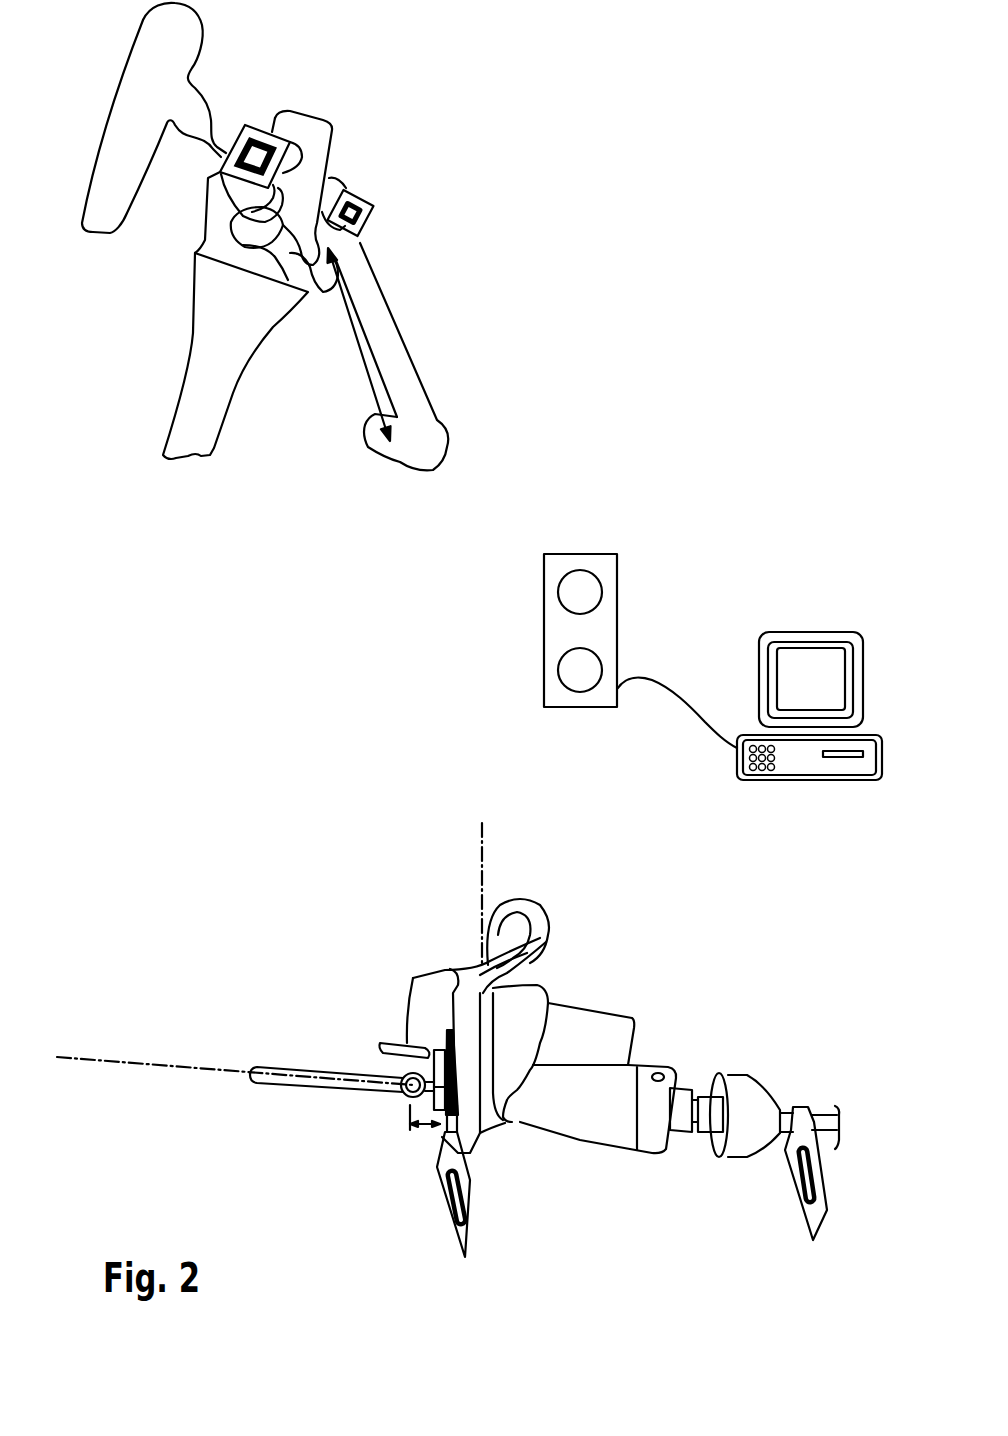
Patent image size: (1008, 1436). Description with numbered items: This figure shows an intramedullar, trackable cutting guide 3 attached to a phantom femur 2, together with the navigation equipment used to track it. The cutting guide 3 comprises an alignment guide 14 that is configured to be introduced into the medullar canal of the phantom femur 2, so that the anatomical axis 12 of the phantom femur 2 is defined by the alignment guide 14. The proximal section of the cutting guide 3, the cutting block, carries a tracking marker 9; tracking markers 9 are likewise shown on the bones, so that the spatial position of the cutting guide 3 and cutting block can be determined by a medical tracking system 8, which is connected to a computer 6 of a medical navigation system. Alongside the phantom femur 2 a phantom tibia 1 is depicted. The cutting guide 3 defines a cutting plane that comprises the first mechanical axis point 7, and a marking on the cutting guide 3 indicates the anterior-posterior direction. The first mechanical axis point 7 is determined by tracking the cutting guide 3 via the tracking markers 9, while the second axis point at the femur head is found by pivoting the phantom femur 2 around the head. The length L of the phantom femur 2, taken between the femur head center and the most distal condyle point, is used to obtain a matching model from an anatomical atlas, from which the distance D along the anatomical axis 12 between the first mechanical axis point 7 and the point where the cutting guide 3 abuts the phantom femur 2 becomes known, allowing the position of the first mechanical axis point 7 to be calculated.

The phantom tibia 1 is at (197, 412).
The phantom femur 2 is at (430, 447).
The cutting guide 3 is at (300, 243).
The computer 6 is at (813, 627).
The first mechanical axis point 7 is at (403, 1102).
The medical tracking system 8 is at (598, 547).
The tracking marker 9 is at (290, 138).
The anatomical axis 12 is at (110, 1058).
The alignment guide 14 is at (133, 120).
The length of the phantom femur L is at (373, 371).
The distance D is at (423, 1126).